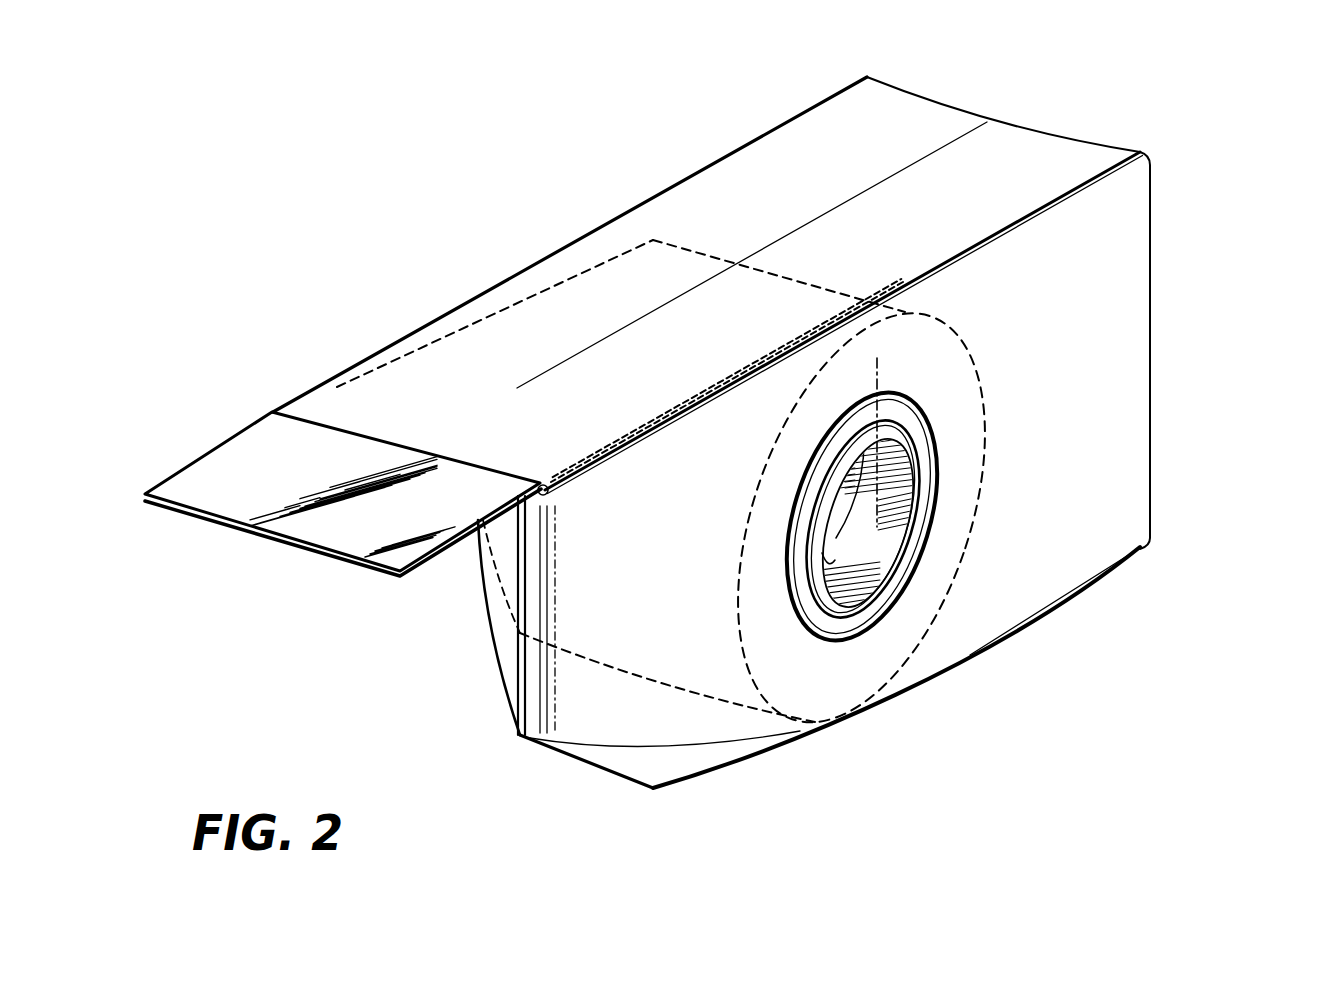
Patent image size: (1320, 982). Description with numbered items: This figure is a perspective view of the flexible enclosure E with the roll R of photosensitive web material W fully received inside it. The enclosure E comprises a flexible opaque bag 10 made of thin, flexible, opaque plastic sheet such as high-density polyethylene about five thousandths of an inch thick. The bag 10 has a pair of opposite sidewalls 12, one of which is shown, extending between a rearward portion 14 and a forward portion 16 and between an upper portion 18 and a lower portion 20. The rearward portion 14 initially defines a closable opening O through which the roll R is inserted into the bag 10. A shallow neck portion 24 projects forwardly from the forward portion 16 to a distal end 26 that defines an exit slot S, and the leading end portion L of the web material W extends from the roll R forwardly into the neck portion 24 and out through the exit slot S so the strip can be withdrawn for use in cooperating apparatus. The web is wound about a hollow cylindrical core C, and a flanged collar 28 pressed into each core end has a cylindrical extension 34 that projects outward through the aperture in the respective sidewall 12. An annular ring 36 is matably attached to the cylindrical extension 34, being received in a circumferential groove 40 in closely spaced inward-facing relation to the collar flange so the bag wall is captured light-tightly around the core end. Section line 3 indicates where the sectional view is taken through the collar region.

The flexible opaque bag 10 is at (1065, 557).
The sidewall 12 is at (990, 620).
The rearward portion 14 is at (1152, 408).
The forward portion 16 is at (577, 635).
The upper portion 18 is at (706, 193).
The lower portion 20 is at (907, 697).
The neck portion 24 is at (423, 367).
The distal end 26 is at (337, 388).
The flanged collar 28 is at (907, 505).
The cylindrical extension 34 is at (930, 458).
The annular ring 36 is at (912, 410).
The circumferential groove 40 is at (820, 462).
The section line 3- 3 is at (858, 366).
The leading end portion L is at (226, 494).
The exit slot S is at (472, 472).
The closable opening O is at (1165, 210).
The photosensitive web material W is at (860, 290).
The core C is at (814, 594).
The roll R is at (835, 692).
The flexible enclosure E is at (968, 683).